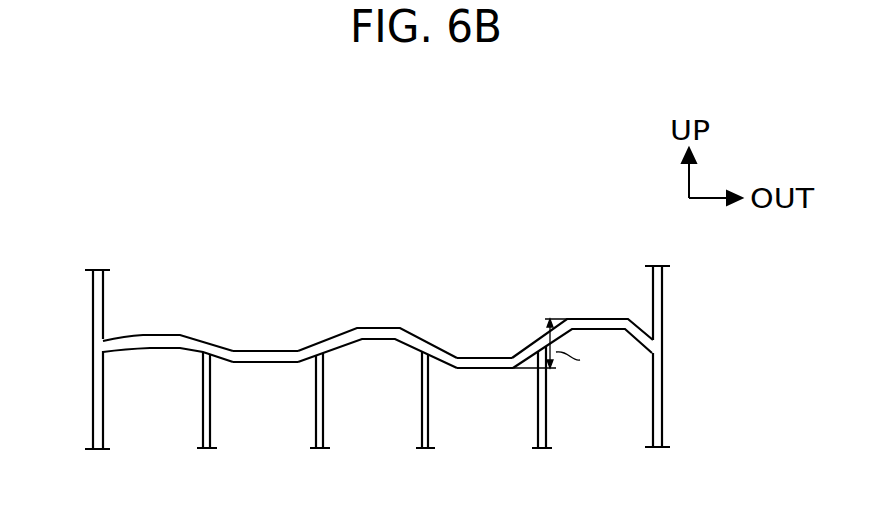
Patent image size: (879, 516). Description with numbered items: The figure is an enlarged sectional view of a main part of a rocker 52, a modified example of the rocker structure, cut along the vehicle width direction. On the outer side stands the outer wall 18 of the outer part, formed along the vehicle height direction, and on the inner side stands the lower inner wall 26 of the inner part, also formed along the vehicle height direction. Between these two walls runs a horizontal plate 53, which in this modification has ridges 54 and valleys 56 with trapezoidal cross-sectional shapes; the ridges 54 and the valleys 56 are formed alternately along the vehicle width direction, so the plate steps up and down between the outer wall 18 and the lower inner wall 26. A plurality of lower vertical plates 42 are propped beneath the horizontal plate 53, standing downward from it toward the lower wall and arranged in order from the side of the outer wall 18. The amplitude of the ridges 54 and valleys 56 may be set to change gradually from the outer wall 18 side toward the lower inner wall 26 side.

The outer wall 18 is at (662, 313).
The lower inner wall 26 is at (96, 320).
The lower vertical plates 42 is at (197, 435).
The rocker 52 is at (432, 363).
The horizontal plate 53 is at (463, 369).
The ridges 54 is at (157, 341).
The valleys 56 is at (265, 362).